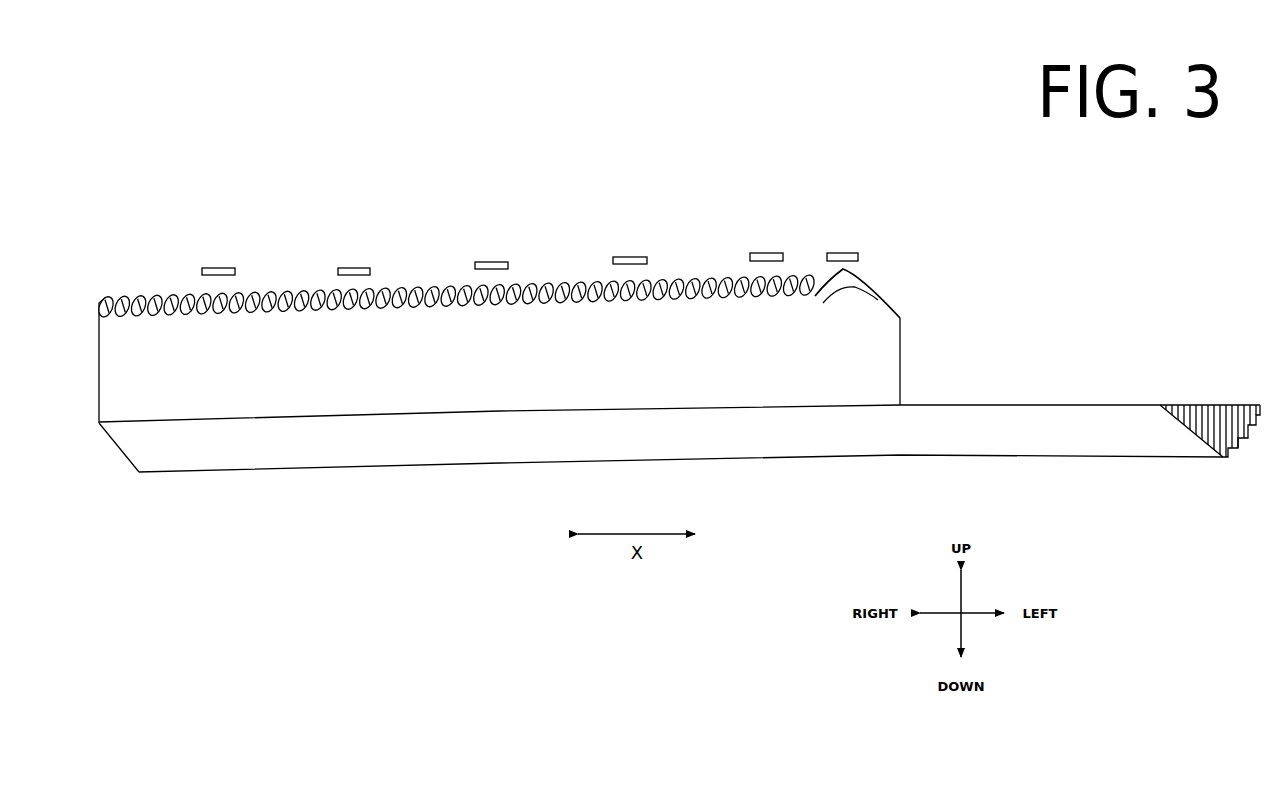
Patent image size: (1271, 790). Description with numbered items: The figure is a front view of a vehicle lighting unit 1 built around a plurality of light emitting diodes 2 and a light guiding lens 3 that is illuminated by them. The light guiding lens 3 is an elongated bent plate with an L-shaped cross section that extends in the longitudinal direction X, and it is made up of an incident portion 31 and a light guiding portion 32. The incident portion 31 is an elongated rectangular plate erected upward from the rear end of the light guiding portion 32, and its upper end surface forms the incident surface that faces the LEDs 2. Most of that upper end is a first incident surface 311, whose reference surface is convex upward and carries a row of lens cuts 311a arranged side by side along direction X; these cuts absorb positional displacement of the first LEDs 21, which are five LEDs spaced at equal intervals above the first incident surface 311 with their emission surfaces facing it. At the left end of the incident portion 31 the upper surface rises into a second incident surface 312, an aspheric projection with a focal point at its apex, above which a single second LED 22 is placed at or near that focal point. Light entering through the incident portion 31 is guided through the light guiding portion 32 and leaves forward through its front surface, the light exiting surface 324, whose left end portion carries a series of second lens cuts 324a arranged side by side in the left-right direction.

The lighting unit 1 is at (676, 57).
The light emitting diodes 2 is at (539, 235).
The light guiding lens 3 is at (265, 497).
The first LEDs 21 is at (218, 266).
The second LED 22 is at (847, 252).
The incident portion 31 is at (887, 367).
The light guiding portion 32 is at (993, 405).
The first incident surface 311 is at (139, 293).
The lens cuts 311a is at (312, 292).
The second incident surface 312 is at (847, 280).
The light exiting surface 324 is at (435, 457).
The second lens cuts 324a is at (1193, 407).